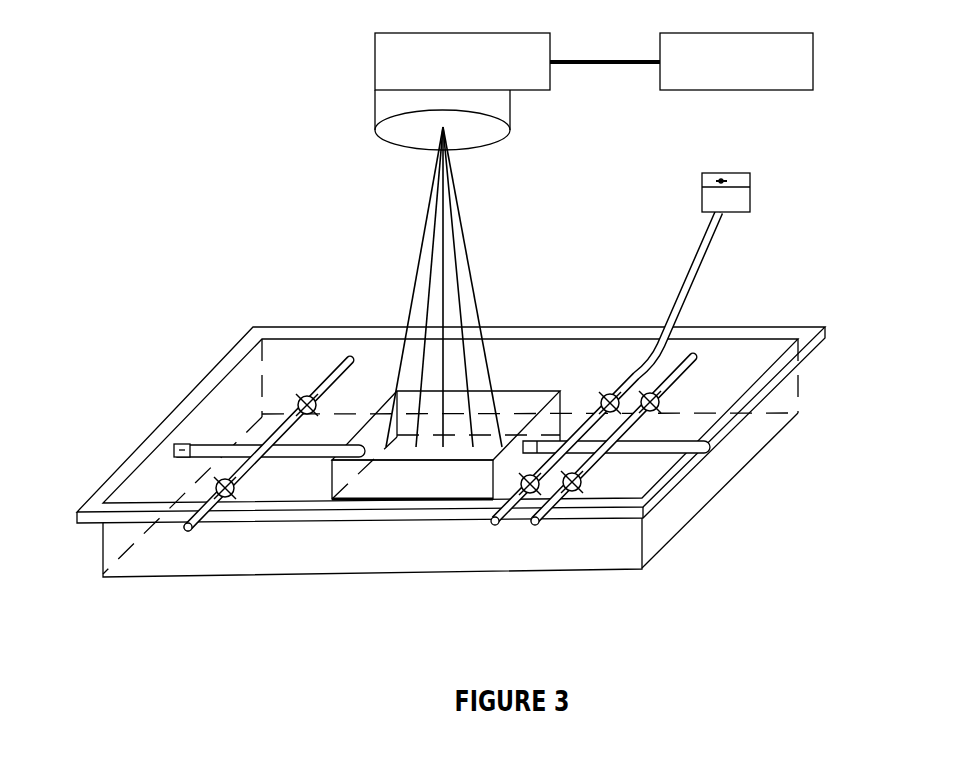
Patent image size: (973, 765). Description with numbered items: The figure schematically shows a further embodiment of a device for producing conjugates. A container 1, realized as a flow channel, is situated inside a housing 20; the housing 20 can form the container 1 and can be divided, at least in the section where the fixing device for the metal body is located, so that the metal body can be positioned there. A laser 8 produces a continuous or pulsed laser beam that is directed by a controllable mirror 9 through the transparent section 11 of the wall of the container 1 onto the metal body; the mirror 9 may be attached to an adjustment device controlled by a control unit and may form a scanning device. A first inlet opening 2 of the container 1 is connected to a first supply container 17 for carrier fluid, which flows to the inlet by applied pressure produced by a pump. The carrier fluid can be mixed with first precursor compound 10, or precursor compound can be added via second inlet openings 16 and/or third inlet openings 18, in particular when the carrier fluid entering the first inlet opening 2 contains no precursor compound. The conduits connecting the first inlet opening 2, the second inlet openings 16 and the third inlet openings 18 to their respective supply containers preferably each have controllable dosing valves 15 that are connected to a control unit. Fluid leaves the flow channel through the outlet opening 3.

The container 1 is at (446, 512).
The first inlet opening 2 is at (212, 393).
The outlet opening 3 is at (733, 443).
The laser 8 is at (681, 61).
The mirror 9 is at (462, 240).
The first precursor compound 10 is at (771, 195).
The transparent section 11 is at (481, 324).
The dosing valve 15 is at (305, 414).
The second inlet opening 16 is at (605, 368).
The first supply container 17 is at (766, 159).
The third inlet opening 18 is at (267, 497).
The housing 20 is at (500, 363).